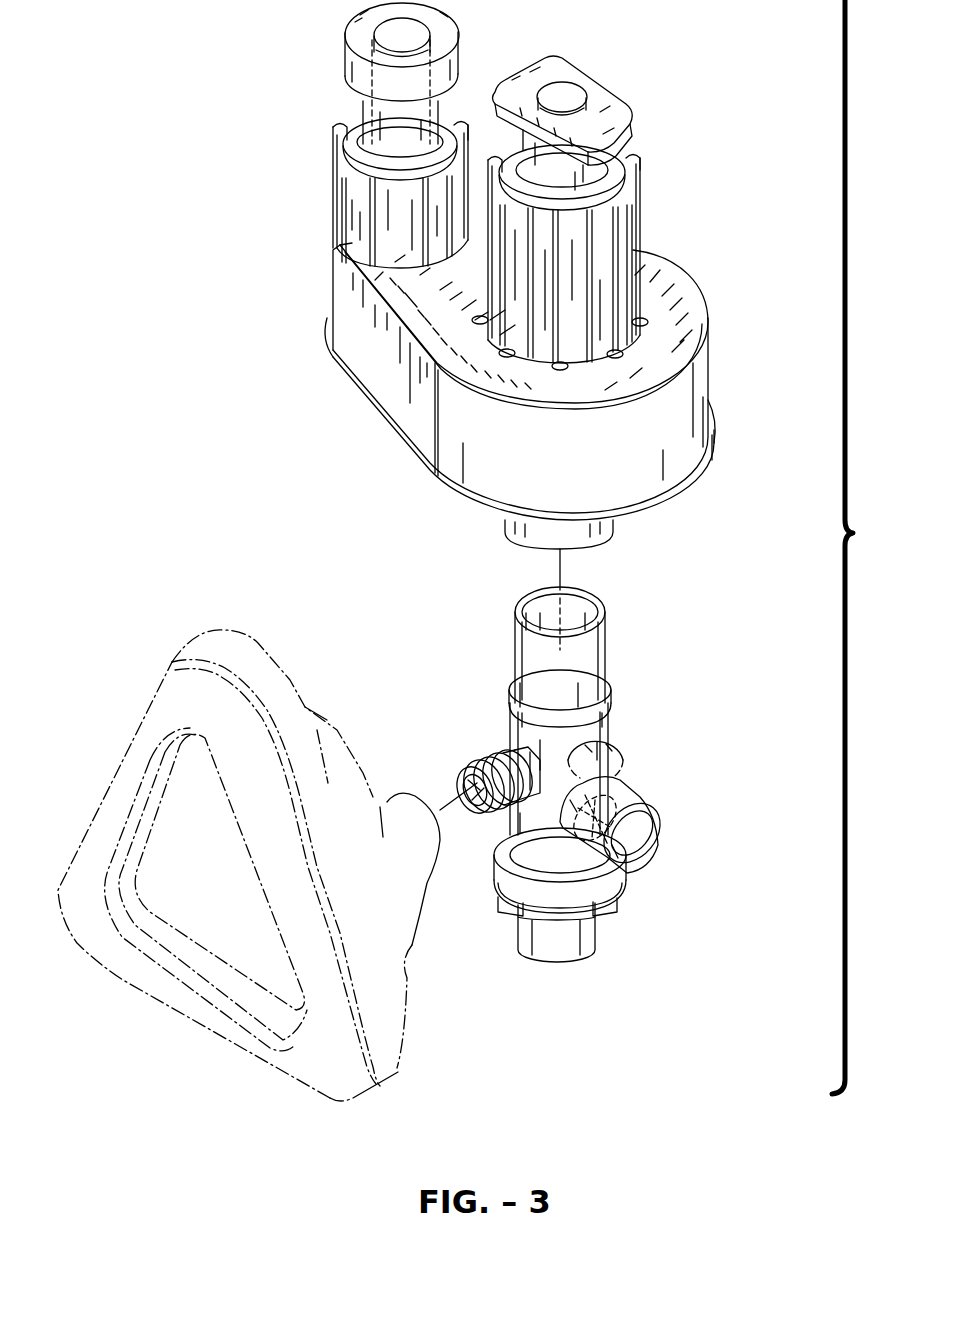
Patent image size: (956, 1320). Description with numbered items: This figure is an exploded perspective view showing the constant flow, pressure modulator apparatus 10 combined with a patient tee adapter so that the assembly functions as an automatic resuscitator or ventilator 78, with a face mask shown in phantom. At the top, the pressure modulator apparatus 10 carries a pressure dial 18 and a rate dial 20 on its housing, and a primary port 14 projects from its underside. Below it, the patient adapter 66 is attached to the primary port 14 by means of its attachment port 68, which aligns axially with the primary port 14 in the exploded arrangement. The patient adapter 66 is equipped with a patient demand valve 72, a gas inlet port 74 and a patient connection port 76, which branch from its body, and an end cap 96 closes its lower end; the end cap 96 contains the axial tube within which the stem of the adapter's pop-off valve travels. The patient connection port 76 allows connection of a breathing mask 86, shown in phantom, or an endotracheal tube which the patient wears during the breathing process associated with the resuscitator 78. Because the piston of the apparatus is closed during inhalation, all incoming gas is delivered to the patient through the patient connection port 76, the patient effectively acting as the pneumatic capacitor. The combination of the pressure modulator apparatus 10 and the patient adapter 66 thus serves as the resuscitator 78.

The pressure modulator apparatus 10 is at (695, 223).
The primary port 14 is at (610, 532).
The pressure dial 18 is at (620, 100).
The rate dial 20 is at (345, 58).
The patient adapter 66 is at (598, 770).
The attachment port 68 is at (606, 612).
The patient demand valve 72 is at (640, 798).
The gas inlet port 74 is at (617, 748).
The patient connection port 76 is at (484, 762).
The resuscitator 78 is at (863, 547).
The breathing mask 86 is at (128, 745).
The end cap 96 is at (618, 895).